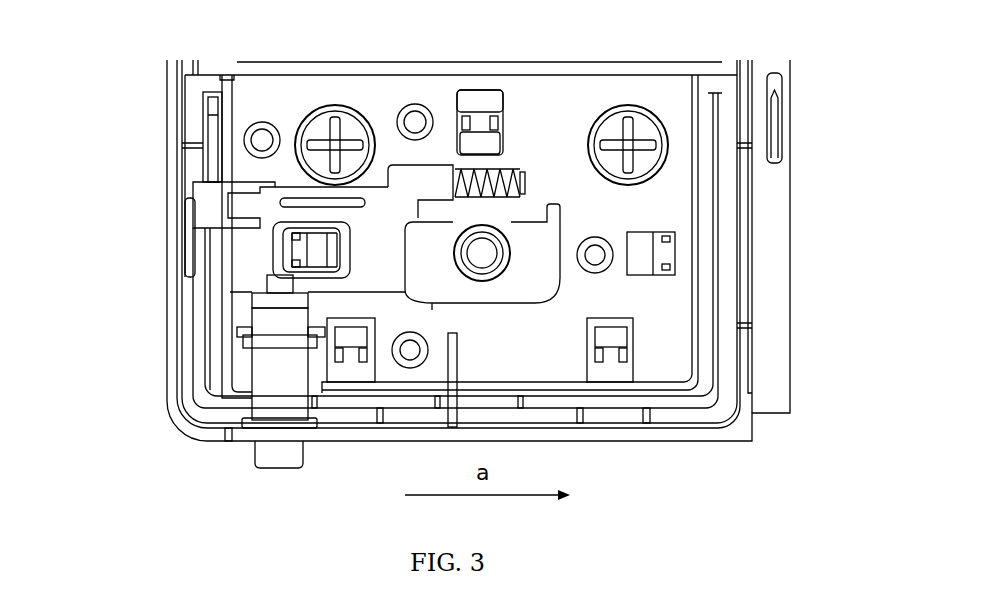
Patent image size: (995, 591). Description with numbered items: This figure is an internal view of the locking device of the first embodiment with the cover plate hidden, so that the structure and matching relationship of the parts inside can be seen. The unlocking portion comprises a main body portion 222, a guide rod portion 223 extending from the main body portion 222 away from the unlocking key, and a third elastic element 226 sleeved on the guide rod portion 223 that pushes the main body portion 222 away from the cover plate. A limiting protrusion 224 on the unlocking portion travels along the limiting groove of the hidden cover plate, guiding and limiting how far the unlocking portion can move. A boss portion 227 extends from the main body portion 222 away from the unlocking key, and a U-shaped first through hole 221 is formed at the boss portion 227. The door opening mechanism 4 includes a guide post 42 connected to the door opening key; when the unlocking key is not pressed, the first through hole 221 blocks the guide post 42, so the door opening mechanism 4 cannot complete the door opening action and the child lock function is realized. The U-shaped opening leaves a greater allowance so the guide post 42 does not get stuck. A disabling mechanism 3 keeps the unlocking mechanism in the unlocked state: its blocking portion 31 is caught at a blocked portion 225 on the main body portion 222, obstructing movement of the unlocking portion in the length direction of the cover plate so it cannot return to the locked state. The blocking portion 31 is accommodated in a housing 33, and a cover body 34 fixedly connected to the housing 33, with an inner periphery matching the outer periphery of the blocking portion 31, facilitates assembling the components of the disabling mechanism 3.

The disabling mechanism 3 is at (176, 278).
The door opening mechanism 4 is at (506, 270).
The blocking portion 31 is at (285, 287).
The housing 33 is at (275, 323).
The cover body 34 is at (276, 299).
The guide post 42 is at (486, 256).
The first through hole 221 is at (505, 236).
The main body portion 222 is at (365, 237).
The guide rod portion 223 is at (470, 165).
The limiting protrusion 224 is at (282, 203).
The blocked portion 225 is at (272, 276).
The third elastic element 226 is at (494, 178).
The boss portion 227 is at (537, 238).